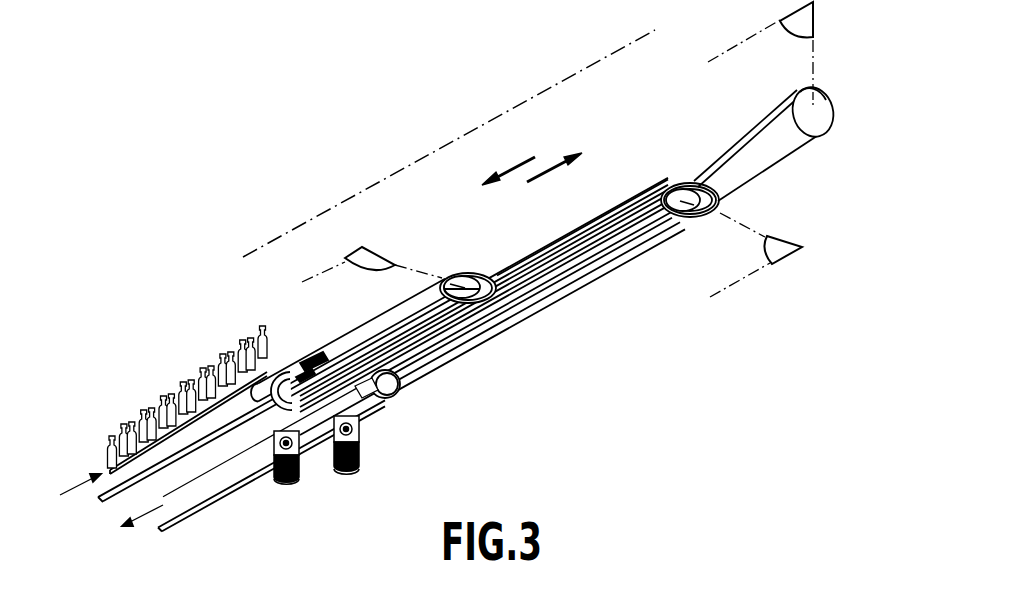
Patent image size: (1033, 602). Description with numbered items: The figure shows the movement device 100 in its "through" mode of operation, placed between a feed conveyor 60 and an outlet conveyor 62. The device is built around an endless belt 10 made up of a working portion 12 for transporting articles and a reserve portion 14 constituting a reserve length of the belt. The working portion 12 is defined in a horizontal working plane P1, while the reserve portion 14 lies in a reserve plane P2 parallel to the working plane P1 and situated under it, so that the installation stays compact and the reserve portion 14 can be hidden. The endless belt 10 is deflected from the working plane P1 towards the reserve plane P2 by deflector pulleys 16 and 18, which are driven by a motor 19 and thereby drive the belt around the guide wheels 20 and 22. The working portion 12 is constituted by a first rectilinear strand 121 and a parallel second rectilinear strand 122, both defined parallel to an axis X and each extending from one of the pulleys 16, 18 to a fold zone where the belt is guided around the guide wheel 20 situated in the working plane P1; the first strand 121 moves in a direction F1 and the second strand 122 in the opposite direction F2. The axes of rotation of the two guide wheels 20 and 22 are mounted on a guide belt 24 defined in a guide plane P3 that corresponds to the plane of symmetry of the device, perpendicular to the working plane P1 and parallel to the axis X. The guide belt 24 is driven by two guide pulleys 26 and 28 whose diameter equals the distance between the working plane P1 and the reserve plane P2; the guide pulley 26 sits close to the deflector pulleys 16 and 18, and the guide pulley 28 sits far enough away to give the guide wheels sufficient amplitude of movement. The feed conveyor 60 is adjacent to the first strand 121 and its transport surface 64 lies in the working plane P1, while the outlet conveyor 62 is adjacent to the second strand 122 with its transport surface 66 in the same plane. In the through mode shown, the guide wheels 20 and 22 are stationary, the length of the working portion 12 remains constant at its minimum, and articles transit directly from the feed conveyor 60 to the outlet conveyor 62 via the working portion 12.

The movement device 100 is at (226, 167).
The axis X is at (383, 177).
The direction F1 is at (554, 179).
The direction F2 is at (508, 161).
The working plane P1 is at (370, 258).
The reserve plane P2 is at (783, 245).
The guide plane P3 is at (805, 20).
The endless belt 10 is at (447, 328).
The working portion 12 is at (478, 273).
The reserve portion 14 is at (600, 277).
The deflector pulley 16 is at (295, 382).
The deflector pulley 18 is at (327, 420).
The motor 19 is at (352, 472).
The guide wheel 20 is at (463, 284).
The guide wheel 22 is at (673, 188).
The guide belt 24 is at (750, 123).
The guide pulley 26 is at (257, 485).
The guide pulley 28 is at (822, 132).
The feed conveyor 60 is at (297, 385).
The outlet conveyor 62 is at (375, 400).
The transport surface 64 is at (108, 470).
The transport surface 66 is at (185, 488).
The first rectilinear strand 121 is at (353, 332).
The second rectilinear strand 122 is at (428, 346).